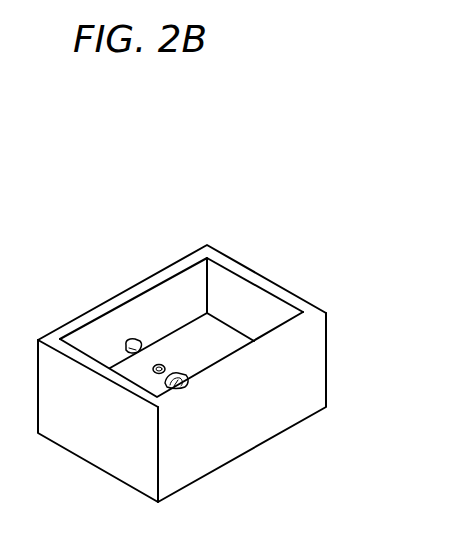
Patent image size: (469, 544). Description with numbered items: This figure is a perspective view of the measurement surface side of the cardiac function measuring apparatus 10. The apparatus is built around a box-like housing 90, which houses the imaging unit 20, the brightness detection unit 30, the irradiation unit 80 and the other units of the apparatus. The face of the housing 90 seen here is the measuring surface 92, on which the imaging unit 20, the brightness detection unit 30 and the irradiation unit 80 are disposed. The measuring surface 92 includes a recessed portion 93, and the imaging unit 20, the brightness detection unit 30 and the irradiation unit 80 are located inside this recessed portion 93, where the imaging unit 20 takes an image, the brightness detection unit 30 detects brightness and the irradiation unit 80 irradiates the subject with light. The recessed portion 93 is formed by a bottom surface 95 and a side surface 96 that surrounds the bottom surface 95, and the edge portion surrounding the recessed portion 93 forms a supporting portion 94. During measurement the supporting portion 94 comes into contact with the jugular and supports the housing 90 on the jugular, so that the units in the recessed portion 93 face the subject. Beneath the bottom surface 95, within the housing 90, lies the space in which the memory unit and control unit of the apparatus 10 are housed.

The cardiac function measuring apparatus 10 is at (70, 210).
The imaging unit 20 is at (176, 372).
The brightness detection unit 30 is at (153, 366).
The irradiation unit 80 is at (137, 340).
The housing 90 is at (330, 321).
The measuring surface 92 is at (49, 336).
The recessed portion 93 is at (166, 317).
The supporting portion 94 is at (90, 324).
The bottom surface 95 is at (228, 340).
The side surface 96 is at (273, 310).